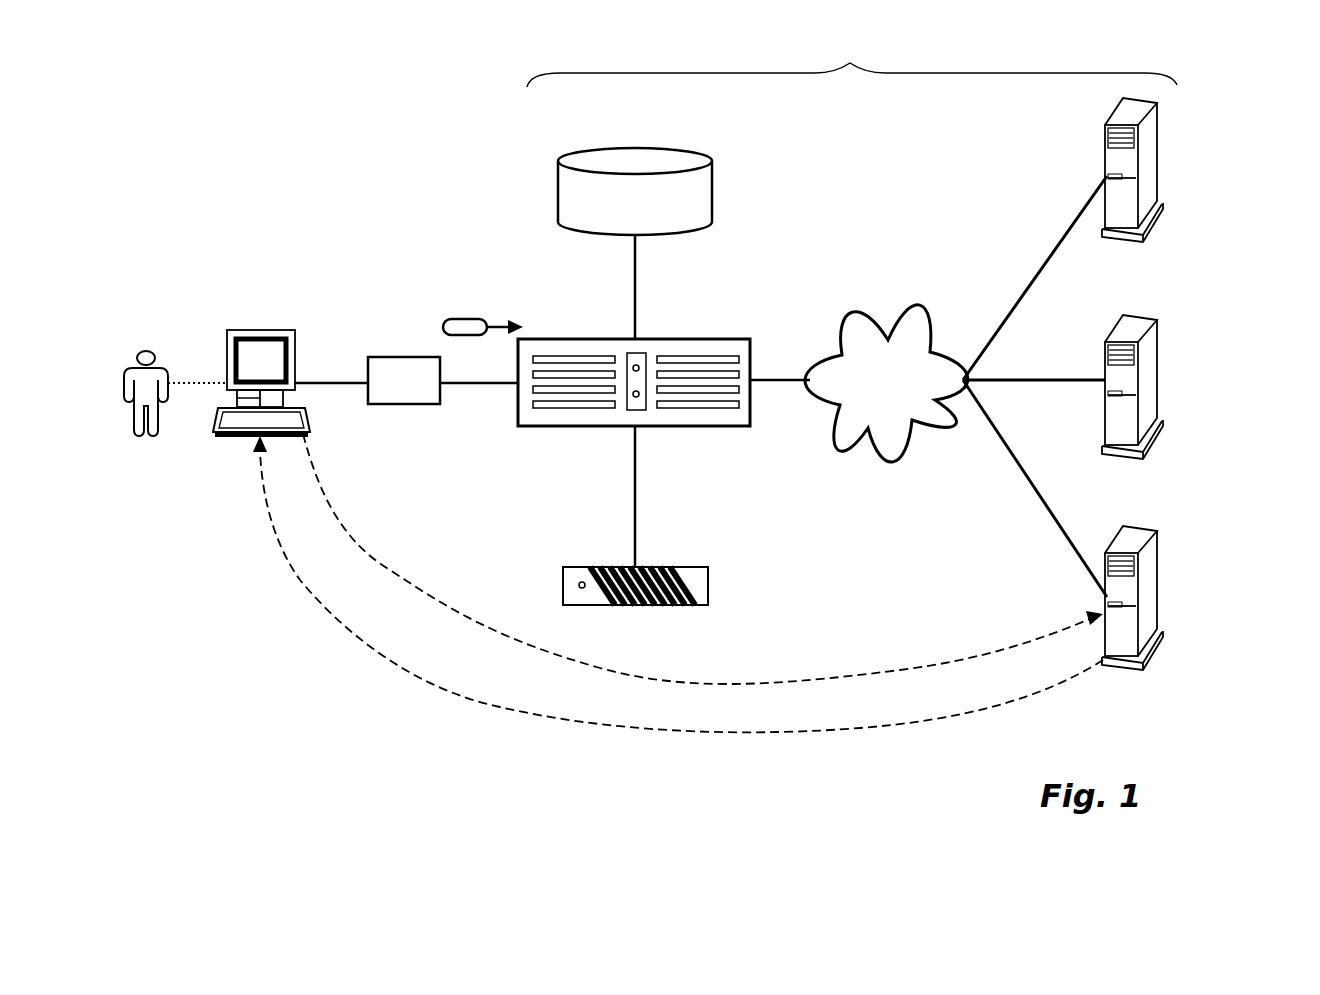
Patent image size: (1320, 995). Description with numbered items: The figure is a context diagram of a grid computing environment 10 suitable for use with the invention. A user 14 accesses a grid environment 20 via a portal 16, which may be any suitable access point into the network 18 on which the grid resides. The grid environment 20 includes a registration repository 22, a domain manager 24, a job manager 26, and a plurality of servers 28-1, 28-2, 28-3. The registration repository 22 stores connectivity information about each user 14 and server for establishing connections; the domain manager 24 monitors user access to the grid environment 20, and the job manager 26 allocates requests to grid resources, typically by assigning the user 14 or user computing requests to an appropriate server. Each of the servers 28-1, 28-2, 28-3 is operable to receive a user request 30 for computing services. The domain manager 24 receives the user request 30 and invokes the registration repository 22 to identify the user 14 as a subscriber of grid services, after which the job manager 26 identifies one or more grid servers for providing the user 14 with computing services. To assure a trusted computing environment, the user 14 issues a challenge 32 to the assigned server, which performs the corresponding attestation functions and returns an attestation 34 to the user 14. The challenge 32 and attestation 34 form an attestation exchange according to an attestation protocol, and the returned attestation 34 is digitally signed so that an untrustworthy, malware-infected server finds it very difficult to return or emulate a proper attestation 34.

The grid computing environment 10 is at (331, 736).
The user 14 is at (262, 330).
The portal 16 is at (420, 404).
The network 18 is at (888, 338).
The grid environment 20 is at (850, 63).
The registration repository 22 is at (558, 176).
The domain manager 24 is at (650, 605).
The job manager 26 is at (692, 427).
The server 28-1 is at (1158, 168).
The server 28-2 is at (1158, 380).
The server 28-3 is at (1158, 597).
The user request 30 is at (455, 319).
The challenge 32 is at (390, 568).
The attestation 34 is at (345, 633).